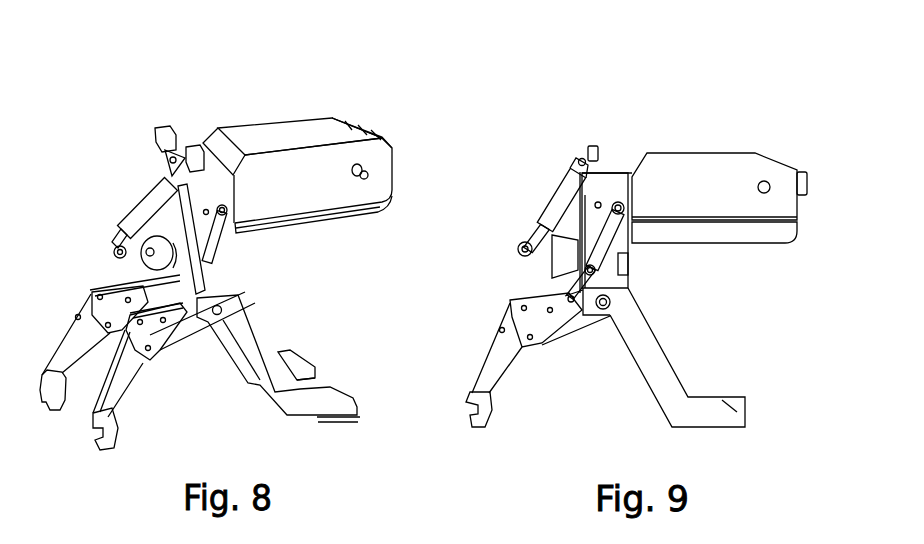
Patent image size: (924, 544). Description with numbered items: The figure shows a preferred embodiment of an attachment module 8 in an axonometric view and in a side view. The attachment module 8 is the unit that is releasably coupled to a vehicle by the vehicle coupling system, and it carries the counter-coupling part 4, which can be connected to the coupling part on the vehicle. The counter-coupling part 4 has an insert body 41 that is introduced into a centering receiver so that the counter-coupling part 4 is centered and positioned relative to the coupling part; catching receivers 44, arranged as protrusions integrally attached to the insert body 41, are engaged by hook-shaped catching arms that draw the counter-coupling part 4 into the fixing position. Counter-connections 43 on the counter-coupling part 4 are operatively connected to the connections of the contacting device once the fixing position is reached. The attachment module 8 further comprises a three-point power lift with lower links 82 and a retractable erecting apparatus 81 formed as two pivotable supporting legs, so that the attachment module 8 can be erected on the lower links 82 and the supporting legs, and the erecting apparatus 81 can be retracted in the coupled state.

In FIG. 8, the counter-coupling part 4 is at (267, 150).
In FIG. 9, the counter-coupling part 4 is at (649, 175).
In FIG. 8, the attachment module 8 is at (180, 195).
In FIG. 9, the attachment module 8 is at (587, 163).
In FIG. 8, the insert body 41 is at (308, 195).
In FIG. 9, the insert body 41 is at (759, 233).
In FIG. 8, the counter-connections 43 is at (392, 150).
In FIG. 9, the counter-connections 43 is at (802, 173).
In FIG. 8, the catching receiver 44 is at (368, 177).
In FIG. 9, the catching receiver 44 is at (760, 185).
In FIG. 8, the retractable erecting apparatus 81 is at (302, 407).
In FIG. 9, the retractable erecting apparatus 81 is at (722, 412).
In FIG. 8, the lower links 82 is at (118, 393).
In FIG. 9, the lower links 82 is at (495, 373).